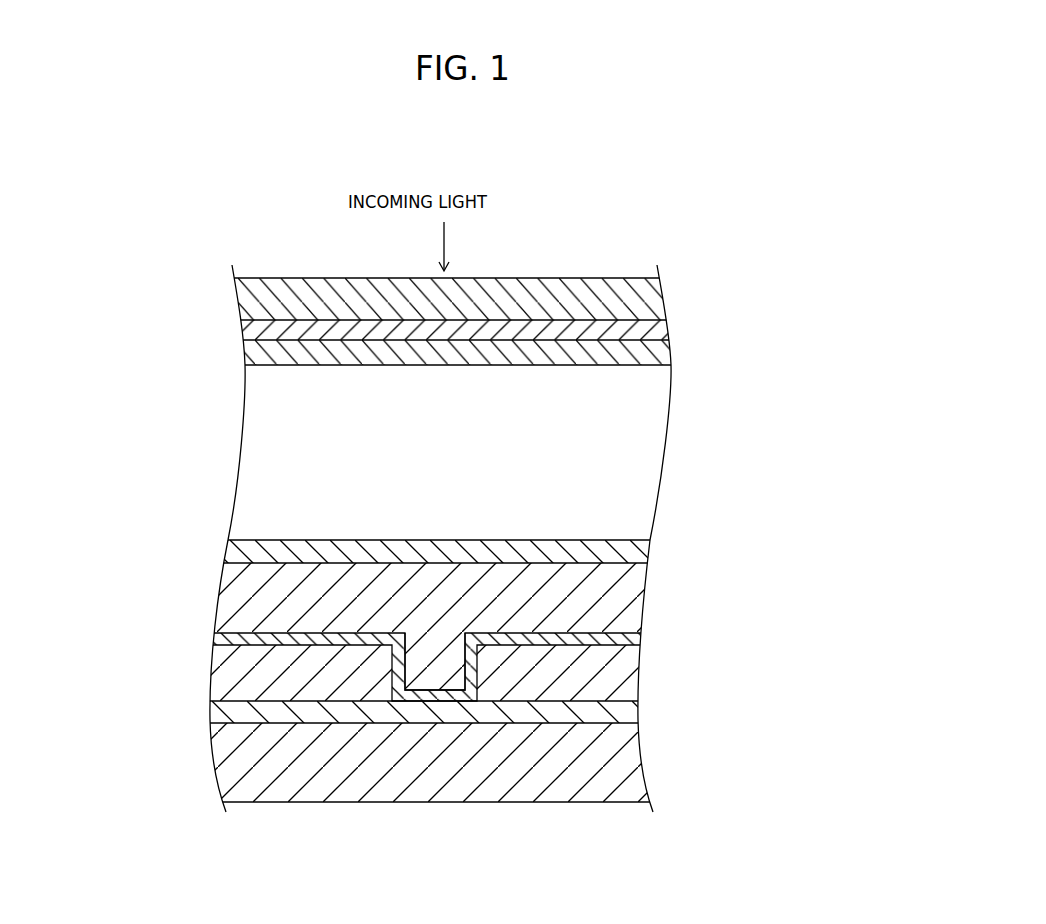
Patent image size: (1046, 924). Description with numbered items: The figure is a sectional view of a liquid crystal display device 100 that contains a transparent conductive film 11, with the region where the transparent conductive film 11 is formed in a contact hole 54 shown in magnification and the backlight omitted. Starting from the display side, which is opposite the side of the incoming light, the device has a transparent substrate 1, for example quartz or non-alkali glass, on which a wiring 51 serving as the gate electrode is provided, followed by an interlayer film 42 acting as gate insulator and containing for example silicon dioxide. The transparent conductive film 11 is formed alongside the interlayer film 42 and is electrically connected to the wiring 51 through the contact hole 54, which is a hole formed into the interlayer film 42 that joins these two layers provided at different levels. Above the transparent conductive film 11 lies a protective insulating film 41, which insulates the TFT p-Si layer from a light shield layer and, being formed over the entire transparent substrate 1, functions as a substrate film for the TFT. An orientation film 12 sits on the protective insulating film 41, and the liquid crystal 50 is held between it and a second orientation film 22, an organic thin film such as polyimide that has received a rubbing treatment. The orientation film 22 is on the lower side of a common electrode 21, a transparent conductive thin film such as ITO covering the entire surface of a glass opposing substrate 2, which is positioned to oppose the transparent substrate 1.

The liquid crystal display device 100 is at (531, 184).
The opposing substrate 2 is at (656, 299).
The common electrode 21 is at (657, 331).
The orientation film 22 is at (657, 353).
The liquid crystal 50 is at (656, 455).
The orientation film 12 is at (647, 550).
The protective insulating film 41 is at (640, 592).
The transparent conductive film 11 is at (641, 637).
The contact hole 54 is at (430, 634).
The interlayer film 42 is at (638, 675).
The wiring 51 is at (637, 710).
The transparent substrate 1 is at (637, 757).